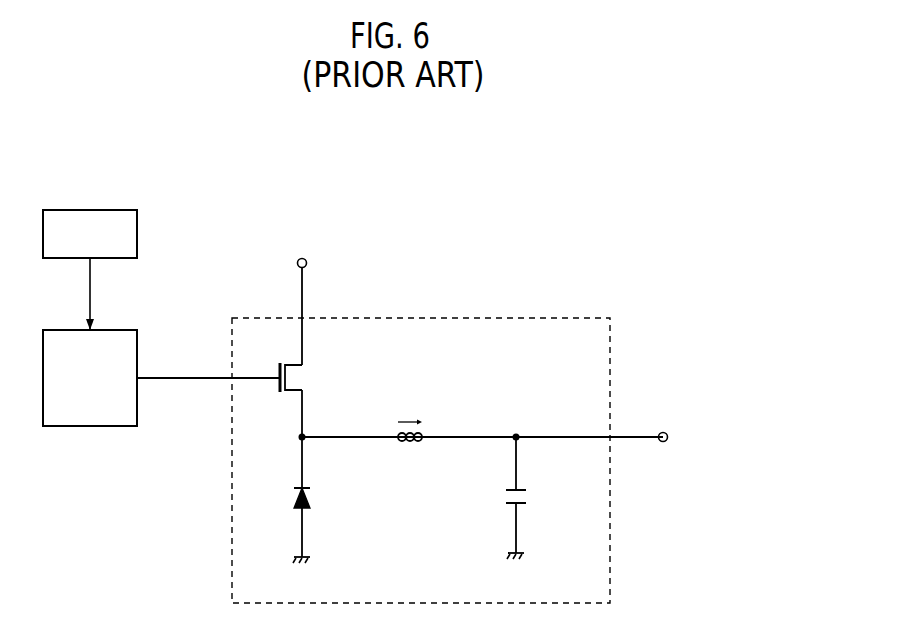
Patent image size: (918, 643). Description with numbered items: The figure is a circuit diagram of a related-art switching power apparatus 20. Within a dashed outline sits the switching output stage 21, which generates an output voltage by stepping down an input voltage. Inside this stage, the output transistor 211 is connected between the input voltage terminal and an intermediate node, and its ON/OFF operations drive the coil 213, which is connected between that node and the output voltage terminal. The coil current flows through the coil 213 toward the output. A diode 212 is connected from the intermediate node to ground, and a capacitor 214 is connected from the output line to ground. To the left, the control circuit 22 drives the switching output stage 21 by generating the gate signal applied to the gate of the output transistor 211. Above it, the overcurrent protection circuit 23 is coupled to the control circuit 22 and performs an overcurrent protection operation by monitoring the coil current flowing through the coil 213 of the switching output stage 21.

The switching power apparatus 20 is at (551, 196).
The switching output stage 21 is at (455, 316).
The control circuit 22 is at (112, 329).
The overcurrent protection circuit 23 is at (91, 209).
The output transistor 211 is at (306, 380).
The diode 212 is at (316, 500).
The coil 213 is at (409, 448).
The output capacitor 214 is at (530, 498).